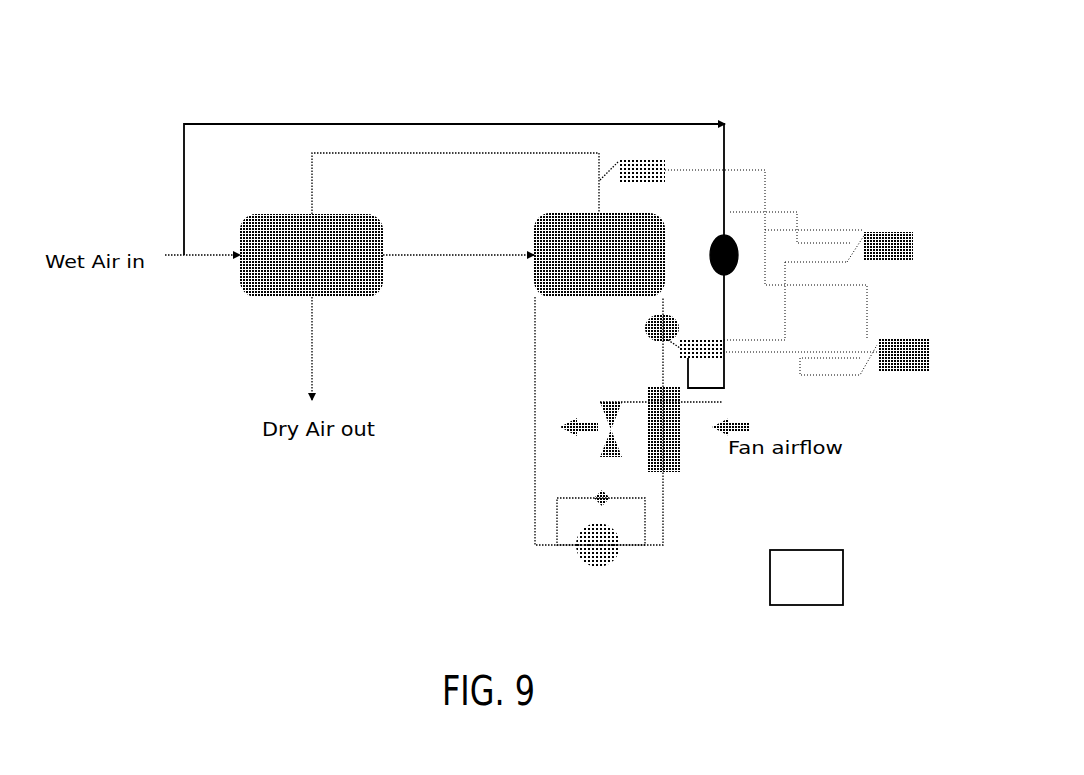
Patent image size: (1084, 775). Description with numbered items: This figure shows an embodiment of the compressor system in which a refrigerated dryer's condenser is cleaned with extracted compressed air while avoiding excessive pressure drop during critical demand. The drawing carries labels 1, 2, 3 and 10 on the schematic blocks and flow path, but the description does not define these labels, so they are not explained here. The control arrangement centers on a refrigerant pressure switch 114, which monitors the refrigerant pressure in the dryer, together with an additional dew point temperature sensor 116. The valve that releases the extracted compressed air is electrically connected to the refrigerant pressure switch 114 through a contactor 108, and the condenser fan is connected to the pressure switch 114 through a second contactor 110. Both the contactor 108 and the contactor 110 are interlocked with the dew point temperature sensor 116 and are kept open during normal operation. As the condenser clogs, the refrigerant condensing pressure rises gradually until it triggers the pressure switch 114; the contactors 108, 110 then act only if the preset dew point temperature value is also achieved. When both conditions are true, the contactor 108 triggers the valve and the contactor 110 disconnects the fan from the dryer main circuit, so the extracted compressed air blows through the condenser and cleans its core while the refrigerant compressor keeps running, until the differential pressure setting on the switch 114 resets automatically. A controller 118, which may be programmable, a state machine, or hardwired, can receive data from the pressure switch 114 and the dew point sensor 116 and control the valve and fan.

The first dehumidifier stage 1 is at (311, 255).
The second dehumidifier stage 2 is at (599, 255).
The pump 3 is at (598, 545).
The dehumidifier unit 10 is at (742, 357).
The contactor 108 is at (880, 232).
The contactor 110 is at (885, 372).
The refrigerant pressure switch 114 is at (688, 392).
The dew point temperature sensor 116 is at (627, 158).
The controller 118 is at (843, 585).